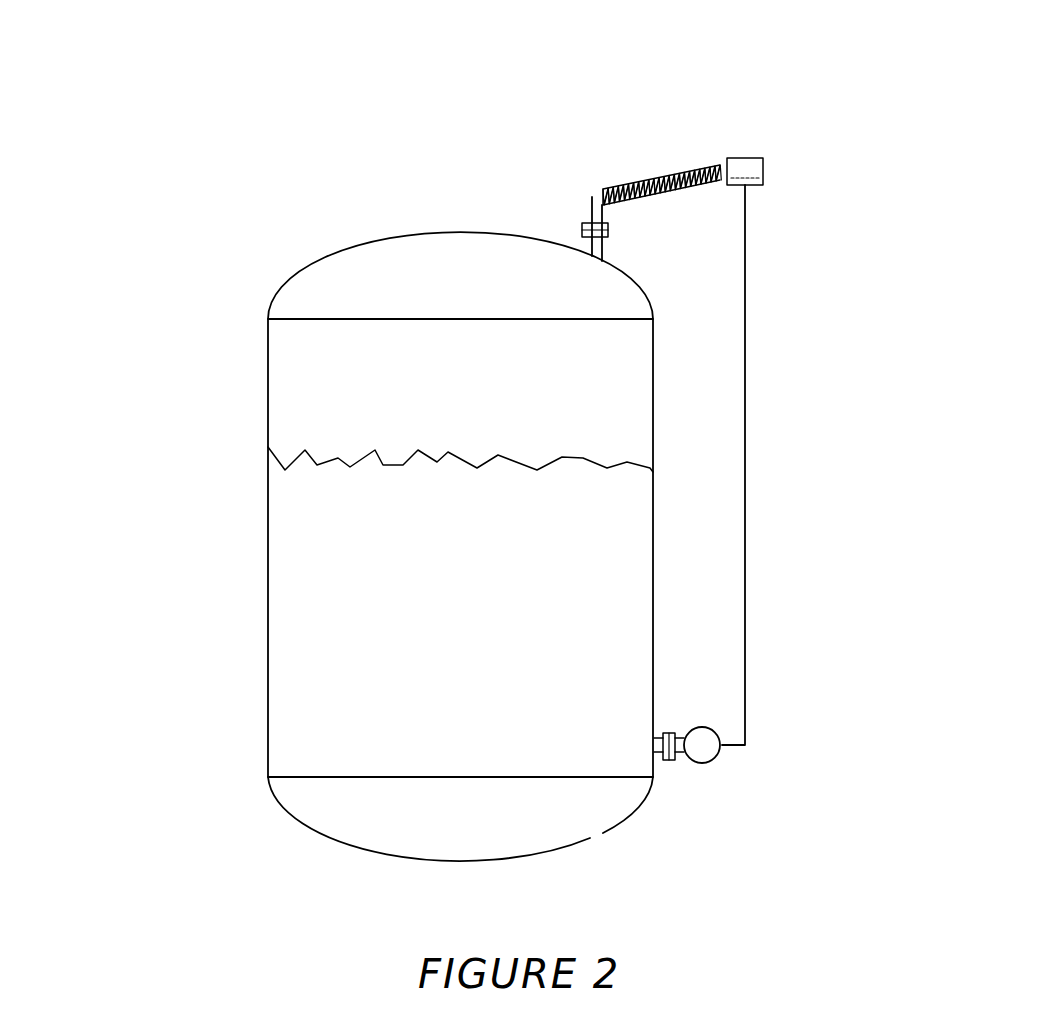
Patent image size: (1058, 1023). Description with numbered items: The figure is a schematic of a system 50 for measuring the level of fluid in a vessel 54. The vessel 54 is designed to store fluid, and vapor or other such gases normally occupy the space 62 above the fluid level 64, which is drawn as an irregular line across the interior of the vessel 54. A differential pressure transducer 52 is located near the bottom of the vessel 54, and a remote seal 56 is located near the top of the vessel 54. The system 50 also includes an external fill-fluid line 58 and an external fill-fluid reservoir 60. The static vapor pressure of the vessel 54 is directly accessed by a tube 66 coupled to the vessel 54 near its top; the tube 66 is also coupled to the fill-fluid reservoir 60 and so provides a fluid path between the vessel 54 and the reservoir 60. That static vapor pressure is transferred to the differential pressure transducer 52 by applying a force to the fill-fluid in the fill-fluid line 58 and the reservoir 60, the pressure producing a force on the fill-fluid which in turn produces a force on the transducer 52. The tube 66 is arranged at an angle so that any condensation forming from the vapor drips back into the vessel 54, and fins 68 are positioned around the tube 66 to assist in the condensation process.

The system 50 is at (212, 228).
The differential pressure transducer 52 is at (712, 755).
The vessel 54 is at (273, 655).
The remote seal 56 is at (737, 140).
The external fill-fluid line 58 is at (745, 257).
The external fill-fluid reservoir 60 is at (753, 163).
The space 62 is at (290, 388).
The fluid level 64 is at (273, 463).
The tube 66 is at (593, 193).
The fins 68 is at (675, 167).